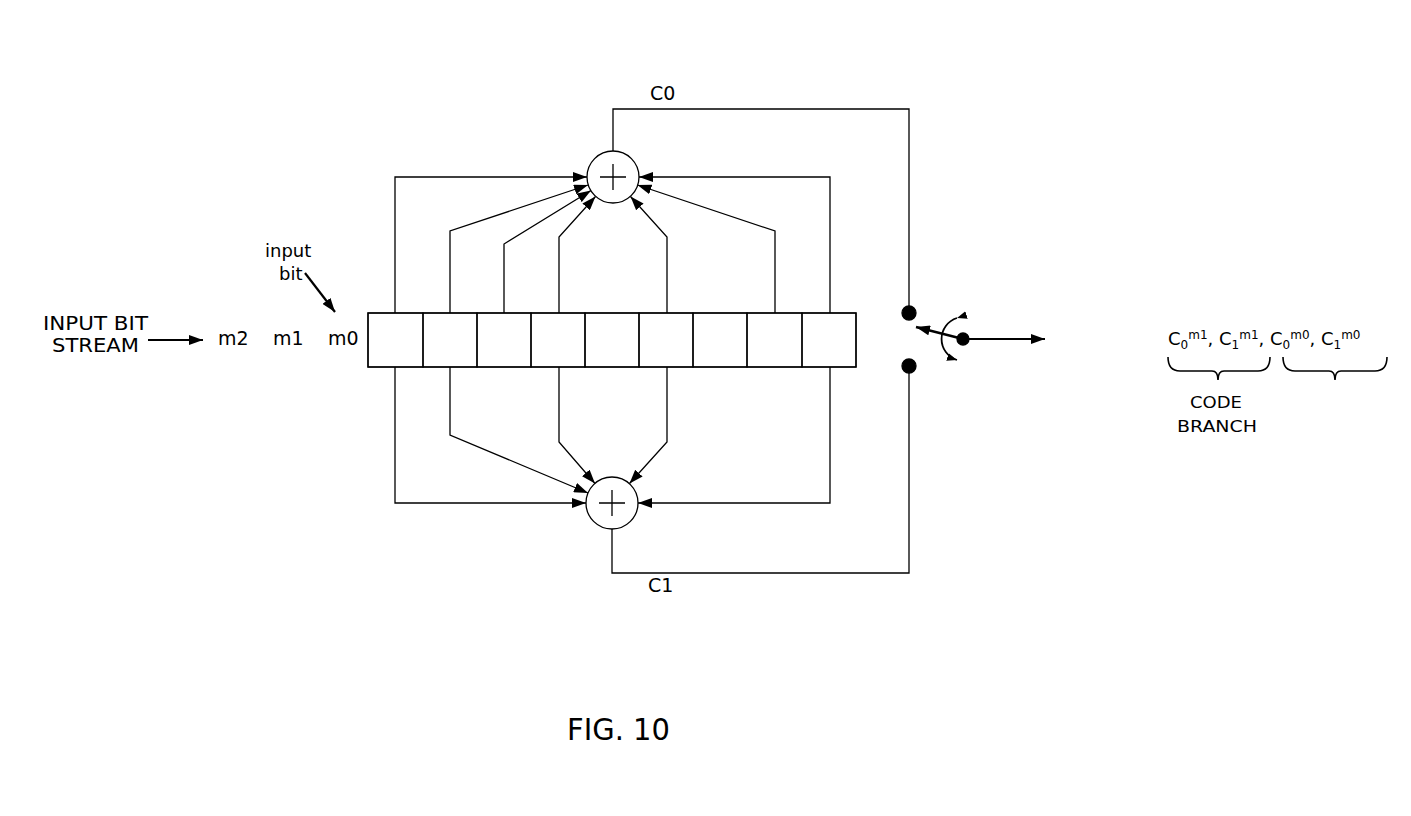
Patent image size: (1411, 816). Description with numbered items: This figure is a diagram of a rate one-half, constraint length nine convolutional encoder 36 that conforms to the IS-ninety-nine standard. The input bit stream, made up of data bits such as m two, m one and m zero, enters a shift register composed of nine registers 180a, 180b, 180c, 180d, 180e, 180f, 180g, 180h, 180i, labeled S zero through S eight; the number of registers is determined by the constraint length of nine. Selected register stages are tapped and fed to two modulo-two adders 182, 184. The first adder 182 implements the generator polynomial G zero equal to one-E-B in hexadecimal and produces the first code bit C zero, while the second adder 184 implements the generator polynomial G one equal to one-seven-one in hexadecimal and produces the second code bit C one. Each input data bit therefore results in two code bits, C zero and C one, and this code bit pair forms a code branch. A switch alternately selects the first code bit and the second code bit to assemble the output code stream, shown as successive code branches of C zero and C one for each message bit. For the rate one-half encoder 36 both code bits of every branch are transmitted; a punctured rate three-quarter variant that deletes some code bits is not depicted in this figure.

The convolutional encoder 36 is at (1026, 88).
The adder 182 is at (593, 153).
The adder 184 is at (593, 524).
The register 180a is at (385, 367).
The register 180b is at (437, 367).
The register 180c is at (490, 367).
The register 180d is at (545, 367).
The register 180e is at (600, 367).
The register 180f is at (655, 367).
The register 180g is at (710, 367).
The register 180h is at (762, 367).
The register 180i is at (817, 367).